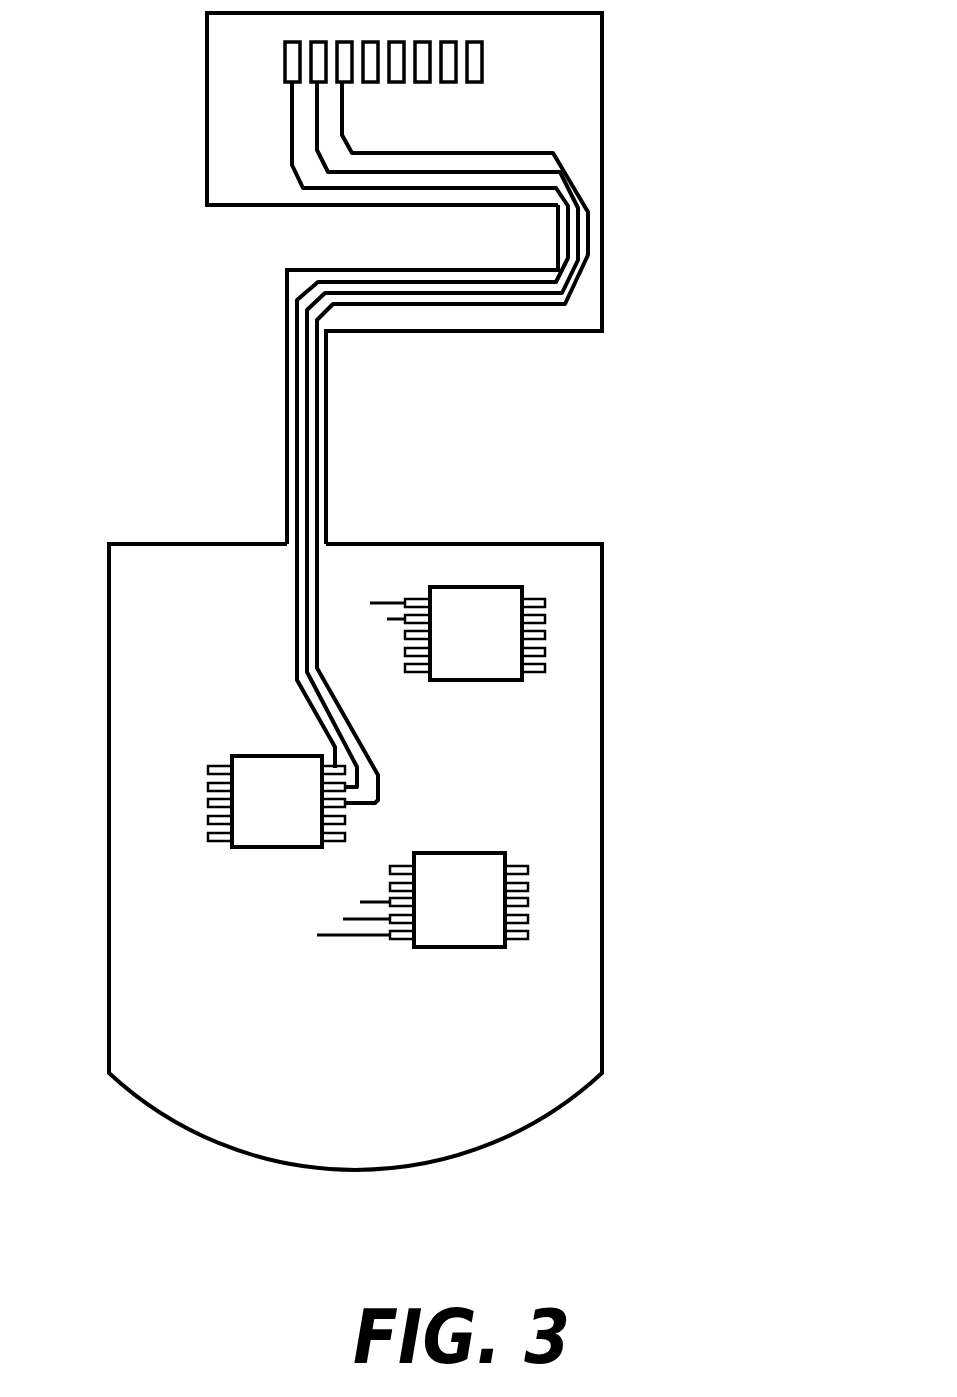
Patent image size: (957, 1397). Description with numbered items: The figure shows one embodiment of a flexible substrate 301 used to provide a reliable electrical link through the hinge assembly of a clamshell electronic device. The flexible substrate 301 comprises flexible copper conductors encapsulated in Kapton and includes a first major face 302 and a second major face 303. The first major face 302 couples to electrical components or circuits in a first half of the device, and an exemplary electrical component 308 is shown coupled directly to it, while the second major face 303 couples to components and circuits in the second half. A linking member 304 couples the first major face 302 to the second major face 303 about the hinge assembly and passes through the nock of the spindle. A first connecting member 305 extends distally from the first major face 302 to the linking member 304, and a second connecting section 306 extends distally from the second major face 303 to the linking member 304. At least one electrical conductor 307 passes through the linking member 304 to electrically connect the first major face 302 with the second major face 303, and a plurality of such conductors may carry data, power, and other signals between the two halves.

The flexible substrate 301 is at (672, 486).
The first major face 302 is at (558, 772).
The second major face 303 is at (240, 170).
The linking member 304 is at (420, 320).
The first connecting member 305 is at (328, 400).
The second connecting section 306 is at (605, 283).
The electrical conductor 307 is at (303, 445).
The electrical component 308 is at (273, 815).